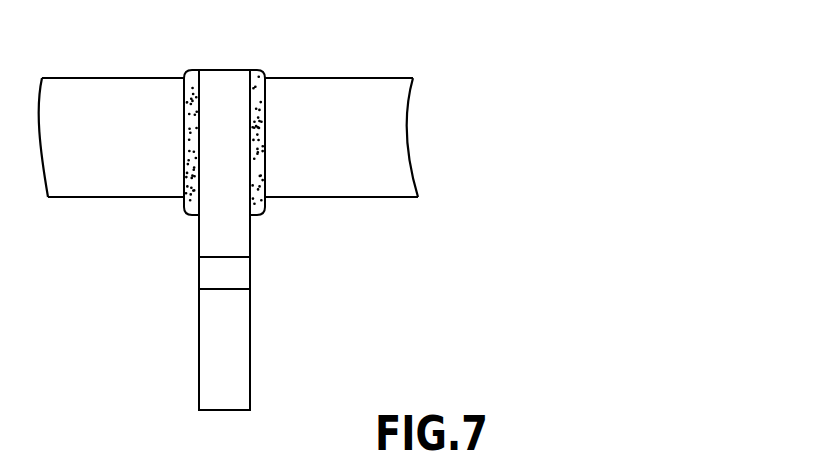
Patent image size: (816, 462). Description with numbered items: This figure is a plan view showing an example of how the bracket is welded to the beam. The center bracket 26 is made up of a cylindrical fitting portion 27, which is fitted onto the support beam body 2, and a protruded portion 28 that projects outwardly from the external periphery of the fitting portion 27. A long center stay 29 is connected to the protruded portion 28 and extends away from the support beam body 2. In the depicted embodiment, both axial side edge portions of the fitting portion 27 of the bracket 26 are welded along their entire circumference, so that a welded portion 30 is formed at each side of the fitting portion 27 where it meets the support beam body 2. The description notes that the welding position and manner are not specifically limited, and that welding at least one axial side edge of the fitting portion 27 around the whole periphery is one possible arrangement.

The support beam body 2 is at (367, 108).
The center bracket 26 is at (236, 147).
The fitting portion 27 is at (218, 88).
The protruded portion 28 is at (232, 270).
The center stay 29 is at (233, 347).
The welded portion 30 is at (183, 163).